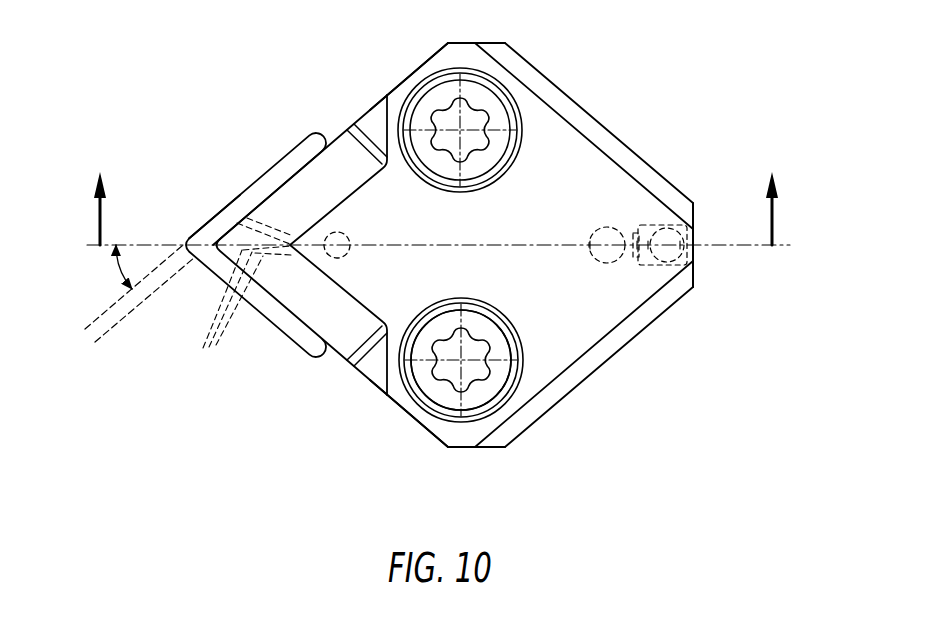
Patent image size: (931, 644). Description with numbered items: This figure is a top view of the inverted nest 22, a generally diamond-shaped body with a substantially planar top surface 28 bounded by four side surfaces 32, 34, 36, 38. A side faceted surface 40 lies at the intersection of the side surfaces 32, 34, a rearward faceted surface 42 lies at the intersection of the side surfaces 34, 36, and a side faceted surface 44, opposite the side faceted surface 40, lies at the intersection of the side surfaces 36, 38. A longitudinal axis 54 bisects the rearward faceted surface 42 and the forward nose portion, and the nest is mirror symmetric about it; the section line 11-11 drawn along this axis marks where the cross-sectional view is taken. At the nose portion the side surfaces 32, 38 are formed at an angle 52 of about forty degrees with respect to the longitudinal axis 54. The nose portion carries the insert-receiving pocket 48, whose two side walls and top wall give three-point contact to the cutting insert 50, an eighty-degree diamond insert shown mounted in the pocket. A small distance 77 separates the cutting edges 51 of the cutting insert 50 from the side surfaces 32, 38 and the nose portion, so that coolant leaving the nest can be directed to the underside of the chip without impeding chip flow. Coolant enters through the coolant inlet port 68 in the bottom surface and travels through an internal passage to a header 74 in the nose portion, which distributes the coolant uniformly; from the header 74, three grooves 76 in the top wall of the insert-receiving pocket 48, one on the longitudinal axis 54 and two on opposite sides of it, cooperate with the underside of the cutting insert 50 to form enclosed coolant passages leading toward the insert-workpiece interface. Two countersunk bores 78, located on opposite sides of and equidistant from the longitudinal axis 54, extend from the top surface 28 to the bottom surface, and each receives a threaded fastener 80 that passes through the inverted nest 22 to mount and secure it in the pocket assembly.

The section line 11- 11 is at (434, 218).
The inverted nest 22 is at (230, 72).
The top surface 28 is at (547, 133).
The side surface 32 is at (369, 108).
The side surface 34 is at (622, 136).
The side surface 36 is at (622, 353).
The side surface 38 is at (347, 370).
The side faceted surface 40 is at (470, 43).
The rearward faceted surface 42 is at (694, 262).
The side faceted surface 44 is at (468, 448).
The insert-receiving pocket 48 is at (208, 200).
The cutting insert 50 is at (255, 178).
The cutting edges 51 is at (287, 157).
The angle 52 is at (112, 267).
The longitudinal axis 54 is at (697, 244).
The coolant inlet port 68 is at (606, 227).
The header 74 is at (347, 238).
The grooves 76 is at (203, 345).
The small distance 77 is at (132, 348).
The countersunk bore 78 is at (428, 97).
The threaded fastener 80 is at (490, 387).